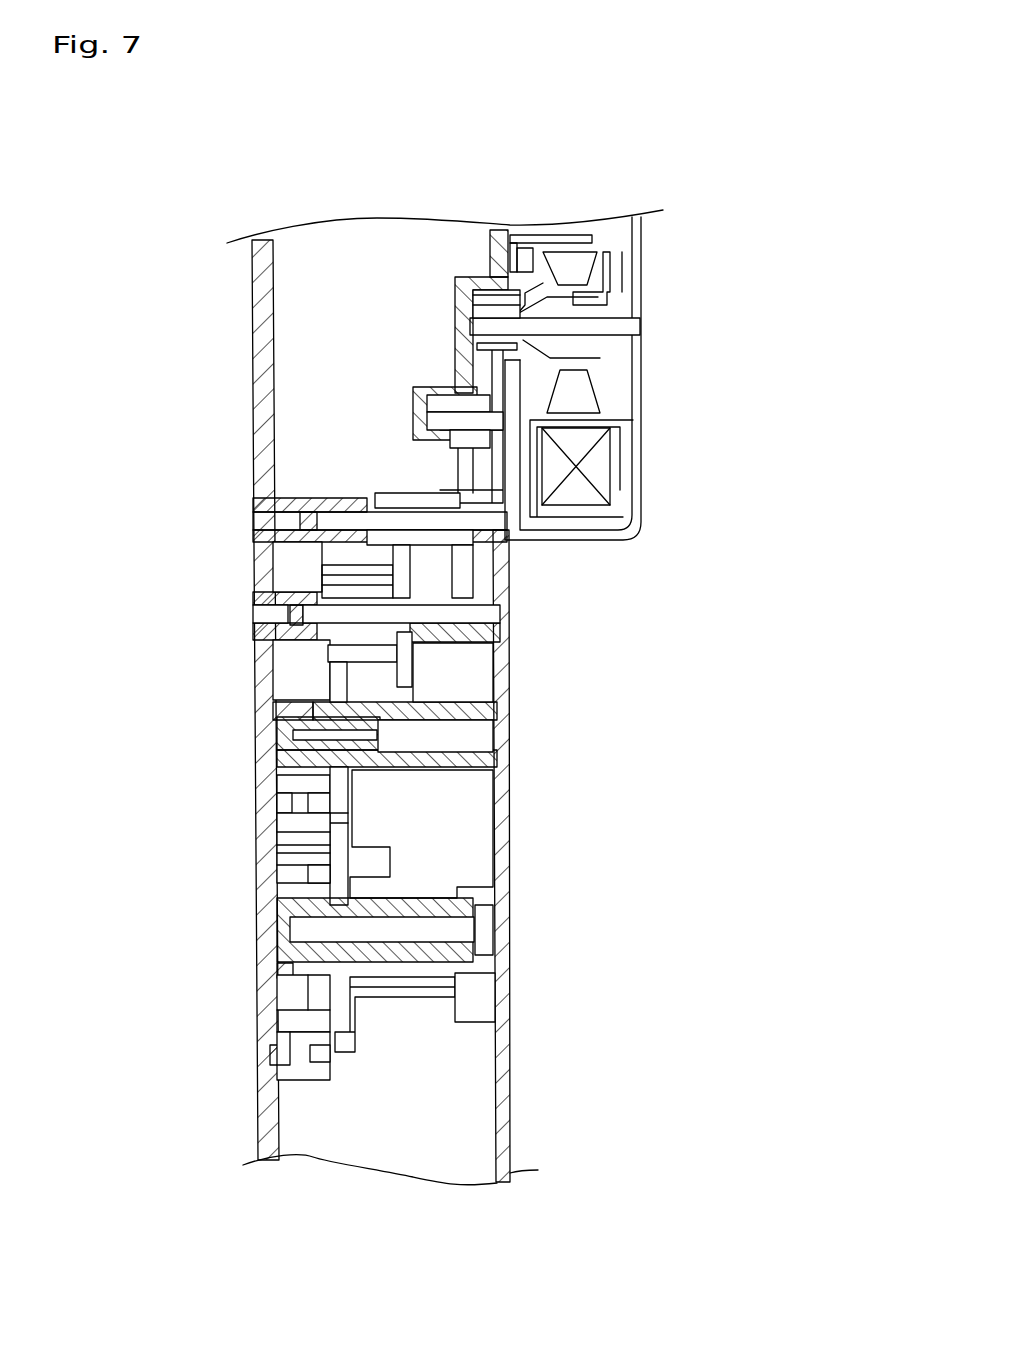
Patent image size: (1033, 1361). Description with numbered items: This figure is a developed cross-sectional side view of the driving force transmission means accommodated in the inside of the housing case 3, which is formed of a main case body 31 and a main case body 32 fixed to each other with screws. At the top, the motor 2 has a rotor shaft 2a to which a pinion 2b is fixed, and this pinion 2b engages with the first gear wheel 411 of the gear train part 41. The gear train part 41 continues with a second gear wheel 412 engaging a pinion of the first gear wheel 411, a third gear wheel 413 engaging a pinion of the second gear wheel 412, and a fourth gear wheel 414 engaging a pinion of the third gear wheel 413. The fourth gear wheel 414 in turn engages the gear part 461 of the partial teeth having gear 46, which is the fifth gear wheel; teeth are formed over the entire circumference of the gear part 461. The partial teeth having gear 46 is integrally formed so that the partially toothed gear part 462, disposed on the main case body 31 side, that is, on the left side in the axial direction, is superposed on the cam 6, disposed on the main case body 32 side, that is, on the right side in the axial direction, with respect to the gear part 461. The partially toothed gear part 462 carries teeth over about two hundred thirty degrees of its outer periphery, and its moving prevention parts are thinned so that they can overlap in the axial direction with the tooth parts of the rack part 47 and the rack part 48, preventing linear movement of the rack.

The motor 2 is at (657, 299).
The rotor shaft 2a is at (510, 328).
The pinion 2b is at (487, 305).
The housing case 3 is at (588, 1238).
The main case body 31 is at (262, 1137).
The main case body 32 is at (514, 1137).
The gear train part 41 is at (770, 1027).
The first gear wheel 411 is at (495, 402).
The second gear wheel 412 is at (463, 487).
The third gear wheel 413 is at (500, 632).
The fourth gear wheel 414 is at (353, 776).
The partial teeth having gear 46 is at (340, 1023).
The gear part 461 is at (386, 1012).
The partially toothed gear part 462 is at (283, 858).
The rack part 47 is at (283, 1068).
The rack part 48 is at (283, 788).
The cam 6 is at (433, 883).